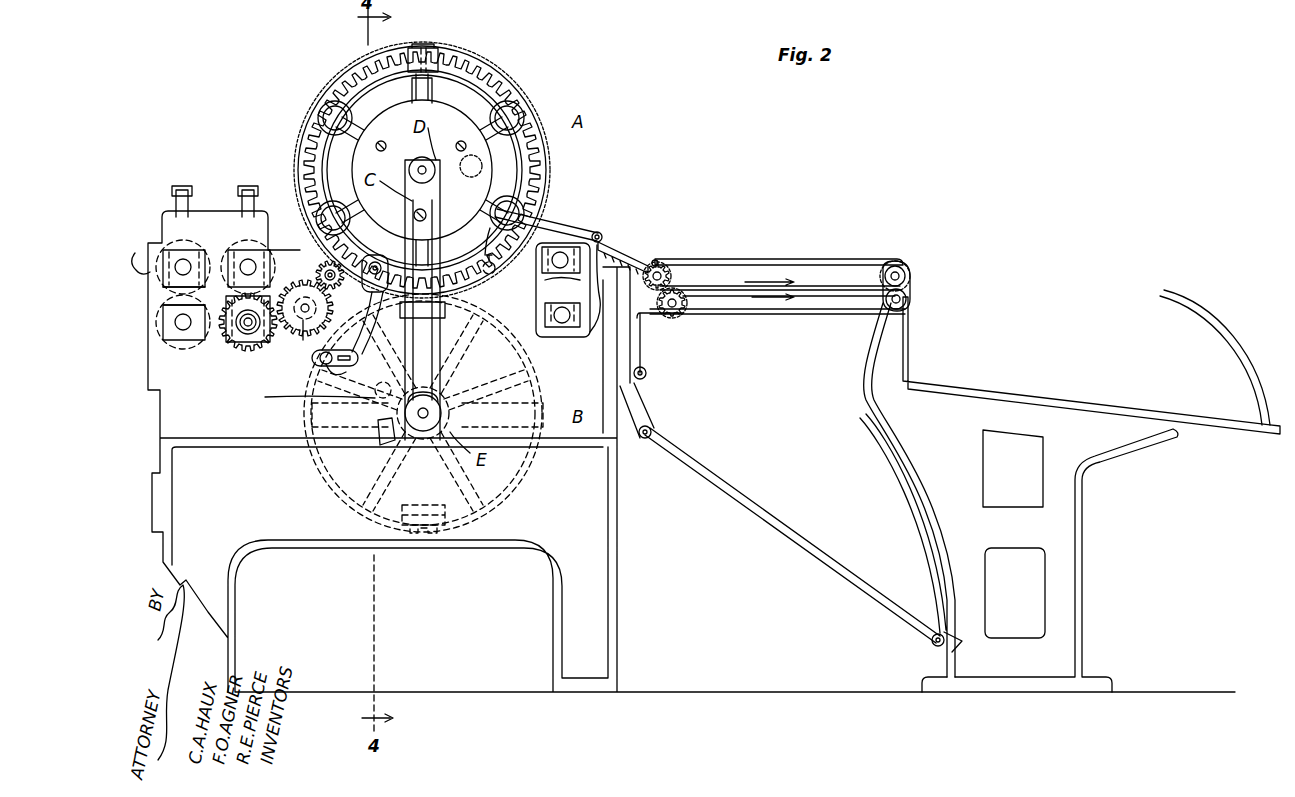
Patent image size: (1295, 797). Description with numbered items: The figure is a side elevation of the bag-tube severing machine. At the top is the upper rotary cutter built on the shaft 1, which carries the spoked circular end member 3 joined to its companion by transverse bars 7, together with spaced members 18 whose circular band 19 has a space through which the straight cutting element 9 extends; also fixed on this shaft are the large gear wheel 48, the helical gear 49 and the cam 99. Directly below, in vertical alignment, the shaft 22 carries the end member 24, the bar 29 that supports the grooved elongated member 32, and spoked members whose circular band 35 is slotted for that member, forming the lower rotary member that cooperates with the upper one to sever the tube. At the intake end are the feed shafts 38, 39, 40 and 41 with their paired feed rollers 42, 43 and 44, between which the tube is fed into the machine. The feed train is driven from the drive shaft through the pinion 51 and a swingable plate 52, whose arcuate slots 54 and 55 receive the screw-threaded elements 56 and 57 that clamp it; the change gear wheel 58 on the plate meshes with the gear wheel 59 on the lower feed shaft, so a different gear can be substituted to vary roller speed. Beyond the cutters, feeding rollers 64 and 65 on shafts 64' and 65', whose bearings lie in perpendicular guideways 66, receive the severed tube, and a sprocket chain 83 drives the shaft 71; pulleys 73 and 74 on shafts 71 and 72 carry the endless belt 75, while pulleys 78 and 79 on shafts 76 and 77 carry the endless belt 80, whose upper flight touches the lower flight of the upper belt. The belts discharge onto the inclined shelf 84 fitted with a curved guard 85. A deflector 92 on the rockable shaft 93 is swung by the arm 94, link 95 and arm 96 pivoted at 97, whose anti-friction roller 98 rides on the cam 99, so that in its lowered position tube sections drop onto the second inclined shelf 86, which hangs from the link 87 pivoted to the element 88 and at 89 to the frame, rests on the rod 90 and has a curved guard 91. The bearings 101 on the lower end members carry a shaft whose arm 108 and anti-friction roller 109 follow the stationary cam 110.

The shaft 1 is at (424, 165).
The circular end member 3 is at (426, 92).
The bars 7 is at (325, 116).
The cutting element 9 is at (420, 48).
The members 18 is at (478, 72).
The circular band 19 is at (498, 78).
The shaft 22 is at (432, 412).
The end member 24 is at (422, 300).
The bar 29 is at (440, 527).
The elongated member 32 is at (426, 528).
The circular band 35 is at (338, 503).
The shaft 38 is at (180, 268).
The shaft 39 is at (160, 325).
The shaft 40 is at (248, 262).
The shaft 41 is at (244, 334).
The feed rollers 42 is at (172, 292).
The feed rollers 43 is at (172, 305).
The feed rollers 44 is at (258, 288).
The gear wheel 48 is at (352, 82).
The helical gear 49 is at (520, 98).
The pinion 51 is at (327, 268).
The plate 52 is at (335, 348).
The arcuate slot 54 is at (362, 352).
The arcuate slot 55 is at (350, 374).
The screw-threaded element 56 is at (414, 214).
The screw-threaded element 57 is at (318, 383).
The gear wheel 58 is at (300, 336).
The gear wheel 59 is at (262, 350).
The feeding roller 64 is at (546, 208).
The shaft 64' is at (567, 263).
The feeding roller 65 is at (545, 315).
The shaft 65' is at (562, 318).
The guideways 66 is at (562, 258).
The shaft 71 is at (662, 270).
The shaft 72 is at (902, 268).
The pulley 73 is at (684, 261).
The pulley 74 is at (888, 264).
The endless belt 75 is at (818, 259).
The shaft 76 is at (678, 310).
The shaft 77 is at (905, 298).
The pulley 78 is at (673, 315).
The pulley 79 is at (880, 305).
The endless belt 80 is at (788, 318).
The sprocket chain 83 is at (640, 262).
The inclined shelf 84 is at (1040, 388).
The curved guard 85 is at (1205, 310).
The second inclined shelf 86 is at (783, 520).
The link 87 is at (646, 408).
The element 88 is at (650, 440).
The pivot 89 is at (648, 376).
The rod 90 is at (930, 643).
The curved guard 91 is at (932, 523).
The deflector 92 is at (650, 260).
The rockable shaft 93 is at (592, 335).
The arm 94 is at (604, 238).
The link 95 is at (535, 222).
The arm 96 is at (495, 270).
The pivot 97 is at (487, 282).
The anti-friction roller 98 is at (472, 166).
The cam 99 is at (422, 170).
The bearings 101 is at (313, 394).
The arm 108 is at (312, 412).
The anti-friction roller 109 is at (383, 440).
The cam 110 is at (431, 395).